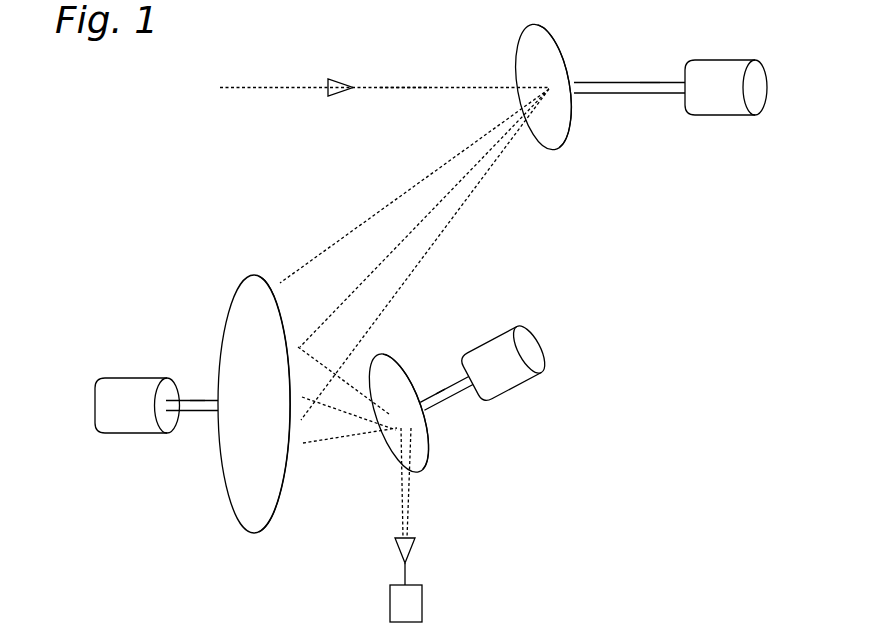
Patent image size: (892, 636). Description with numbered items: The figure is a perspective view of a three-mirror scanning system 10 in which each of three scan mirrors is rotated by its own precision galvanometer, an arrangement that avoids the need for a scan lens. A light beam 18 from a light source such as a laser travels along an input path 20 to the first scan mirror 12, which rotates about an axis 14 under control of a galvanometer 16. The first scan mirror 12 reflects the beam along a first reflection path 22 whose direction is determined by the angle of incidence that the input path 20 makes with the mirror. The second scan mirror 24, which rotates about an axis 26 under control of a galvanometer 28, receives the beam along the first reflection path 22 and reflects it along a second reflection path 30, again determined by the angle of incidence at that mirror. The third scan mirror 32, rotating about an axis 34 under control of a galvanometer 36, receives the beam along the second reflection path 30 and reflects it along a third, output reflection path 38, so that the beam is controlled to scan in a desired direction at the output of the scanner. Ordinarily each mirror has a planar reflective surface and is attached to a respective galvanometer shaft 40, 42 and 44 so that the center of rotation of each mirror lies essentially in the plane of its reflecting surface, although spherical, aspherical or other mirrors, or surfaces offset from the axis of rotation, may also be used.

The scanning system 10 is at (207, 63).
The first scan mirror 12 is at (562, 36).
The axis 14 is at (643, 95).
The galvanometer 16 is at (734, 62).
The light beam 18 is at (437, 87).
The input path 20 is at (405, 90).
The first reflection path 22 is at (475, 190).
The second scan mirror 24 is at (248, 300).
The axis 26 is at (205, 412).
The galvanometer 28 is at (135, 378).
The second reflection path 30 is at (357, 437).
The third scan mirror 32 is at (430, 471).
The axis 34 is at (447, 396).
The galvanometer 36 is at (530, 350).
The output reflection path 38 is at (408, 507).
The galvanometer shaft 40 is at (656, 82).
The galvanometer shaft 42 is at (189, 400).
The galvanometer shaft 44 is at (441, 390).